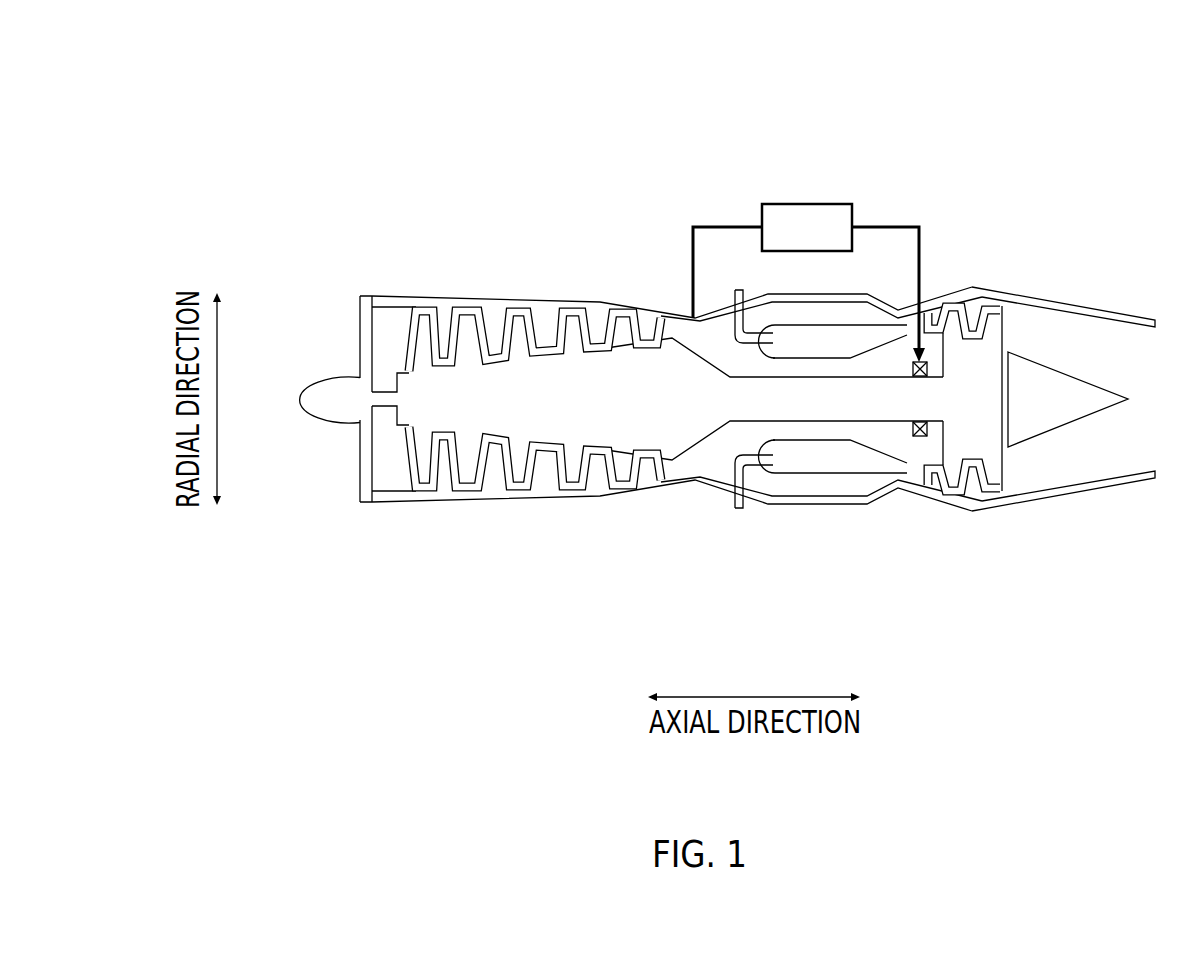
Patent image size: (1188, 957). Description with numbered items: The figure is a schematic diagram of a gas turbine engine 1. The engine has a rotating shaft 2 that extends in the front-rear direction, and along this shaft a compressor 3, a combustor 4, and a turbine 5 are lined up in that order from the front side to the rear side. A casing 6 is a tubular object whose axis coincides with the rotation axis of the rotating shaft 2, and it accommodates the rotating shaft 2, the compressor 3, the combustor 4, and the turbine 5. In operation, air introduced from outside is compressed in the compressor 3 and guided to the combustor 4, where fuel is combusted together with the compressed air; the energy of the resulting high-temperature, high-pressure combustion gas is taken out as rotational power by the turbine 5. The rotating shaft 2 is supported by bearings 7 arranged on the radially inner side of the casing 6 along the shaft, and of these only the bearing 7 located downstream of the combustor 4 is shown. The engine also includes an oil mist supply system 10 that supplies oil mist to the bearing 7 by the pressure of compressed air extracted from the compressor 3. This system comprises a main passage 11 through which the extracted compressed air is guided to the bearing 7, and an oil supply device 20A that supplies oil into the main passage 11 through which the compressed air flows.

The gas turbine engine 1 is at (304, 158).
The rotating shaft 2 is at (858, 410).
The compressor 3 is at (577, 470).
The combustor 4 is at (812, 467).
The turbine 5 is at (998, 492).
The casing 6 is at (1097, 307).
The bearing 7 is at (920, 437).
The oil mist supply system 10 is at (847, 223).
The main passage 11 is at (925, 285).
The oil supply device 20A is at (806, 204).